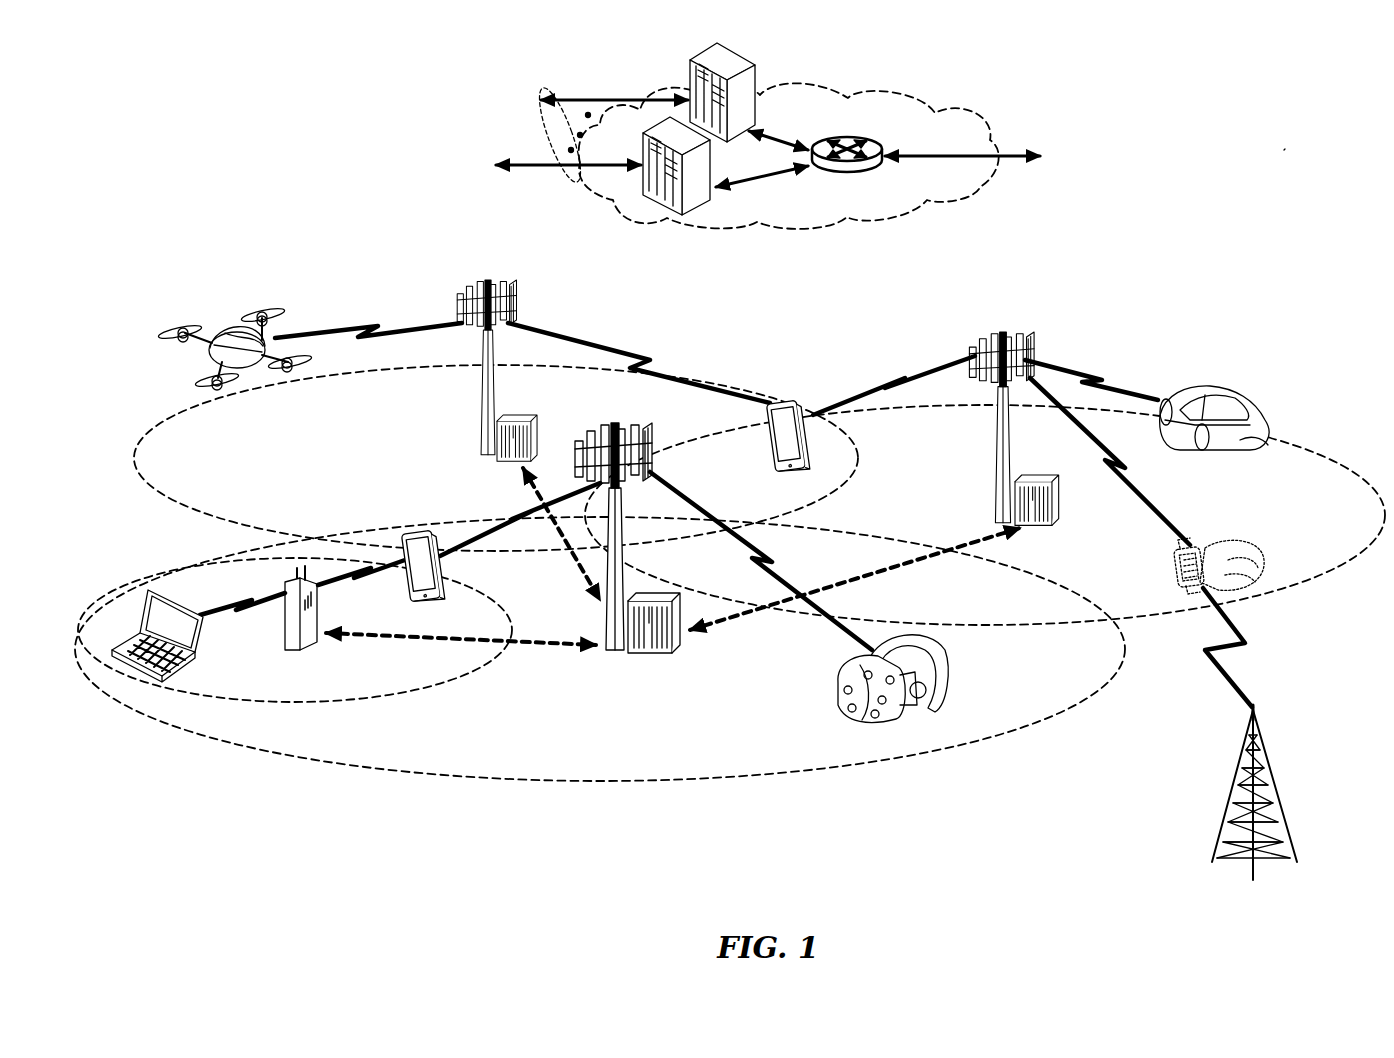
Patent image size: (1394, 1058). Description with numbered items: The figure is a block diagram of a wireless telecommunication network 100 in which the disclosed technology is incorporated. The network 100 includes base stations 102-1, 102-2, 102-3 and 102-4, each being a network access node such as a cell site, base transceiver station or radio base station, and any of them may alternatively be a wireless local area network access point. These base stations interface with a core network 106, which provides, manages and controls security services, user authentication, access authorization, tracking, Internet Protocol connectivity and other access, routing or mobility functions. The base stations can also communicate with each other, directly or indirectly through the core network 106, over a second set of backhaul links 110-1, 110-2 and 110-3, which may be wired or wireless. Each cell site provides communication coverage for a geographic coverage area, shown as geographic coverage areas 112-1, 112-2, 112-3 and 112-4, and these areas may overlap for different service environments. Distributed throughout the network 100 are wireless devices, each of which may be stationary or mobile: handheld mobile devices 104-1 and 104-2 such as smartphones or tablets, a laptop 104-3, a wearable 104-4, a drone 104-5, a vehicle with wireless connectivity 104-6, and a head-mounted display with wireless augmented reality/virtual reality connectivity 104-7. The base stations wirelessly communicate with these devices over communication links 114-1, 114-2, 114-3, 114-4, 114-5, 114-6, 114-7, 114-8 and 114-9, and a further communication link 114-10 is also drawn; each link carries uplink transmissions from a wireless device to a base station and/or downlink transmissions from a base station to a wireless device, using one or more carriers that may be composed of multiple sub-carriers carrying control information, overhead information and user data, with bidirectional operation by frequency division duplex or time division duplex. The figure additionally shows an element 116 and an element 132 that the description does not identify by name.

The wireless telecommunication network 100 is at (1290, 144).
The base station 102-1 is at (612, 655).
The base station 102-2 is at (482, 405).
The base station 102-3 is at (993, 440).
The base station 102-4 is at (285, 640).
The handheld mobile device 104-1 is at (440, 578).
The handheld mobile device 104-2 is at (770, 440).
The laptop 104-3 is at (135, 675).
The wearable 104-4 is at (1200, 542).
The drone 104-5 is at (250, 378).
The vehicle with wireless connectivity 104-6 is at (1235, 392).
The head-mounted display with wireless AR/VR connectivity 104-7 is at (945, 643).
The core network 106 is at (895, 224).
The backhaul link 110-1 is at (360, 635).
The backhaul link 110-2 is at (925, 565).
The backhaul link 110-3 is at (578, 565).
The geographic coverage area 112-1 is at (550, 783).
The geographic coverage area 112-2 is at (425, 690).
The geographic coverage area 112-3 is at (195, 515).
The geographic coverage area 112-4 is at (1298, 447).
The communication link 114-1 is at (770, 565).
The communication link 114-2 is at (505, 512).
The communication link 114-3 is at (218, 612).
The communication link 114-4 is at (362, 585).
The communication link 114-5 is at (368, 330).
The communication link 114-6 is at (650, 360).
The communication link 114-7 is at (888, 380).
The communication link 114-8 is at (1122, 480).
The communication link 114-9 is at (1092, 372).
The communication link 114-10 is at (1243, 645).
The broadcast tower 116 is at (1268, 750).
The antenna 132 is at (548, 176).